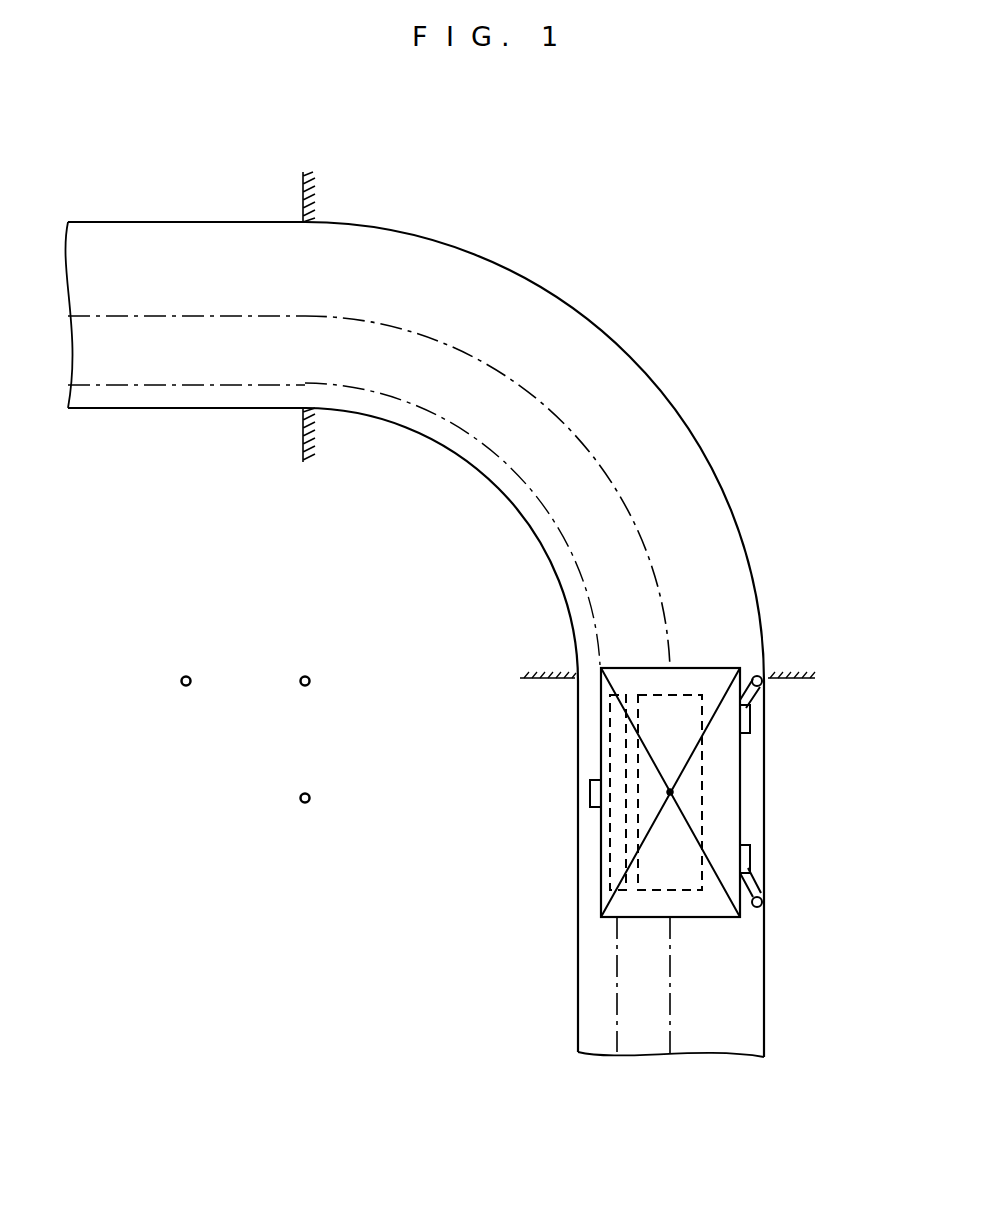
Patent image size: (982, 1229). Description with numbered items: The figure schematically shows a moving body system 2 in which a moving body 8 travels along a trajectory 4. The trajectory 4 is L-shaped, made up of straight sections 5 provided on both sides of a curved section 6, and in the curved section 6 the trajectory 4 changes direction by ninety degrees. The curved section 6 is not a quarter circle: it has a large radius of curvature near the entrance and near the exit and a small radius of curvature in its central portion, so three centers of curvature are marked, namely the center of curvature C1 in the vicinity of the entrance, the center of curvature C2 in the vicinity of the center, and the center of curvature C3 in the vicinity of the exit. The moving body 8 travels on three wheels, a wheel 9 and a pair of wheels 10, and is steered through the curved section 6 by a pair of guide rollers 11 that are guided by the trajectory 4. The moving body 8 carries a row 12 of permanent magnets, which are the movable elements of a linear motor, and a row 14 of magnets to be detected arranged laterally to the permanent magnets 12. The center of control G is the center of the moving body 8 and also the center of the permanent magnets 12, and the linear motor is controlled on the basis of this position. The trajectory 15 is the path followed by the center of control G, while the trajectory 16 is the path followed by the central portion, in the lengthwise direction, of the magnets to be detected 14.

The moving body system 2 is at (292, 1040).
The trajectory 4 is at (572, 866).
The straight sections 5 is at (183, 400).
The curved section 6 is at (622, 369).
The moving body 8 is at (732, 760).
The wheel 9 is at (594, 790).
The pair of wheels 10 is at (745, 718).
The guide rollers 11 is at (757, 666).
The row of permanent magnets 12 is at (660, 875).
The row of magnets to be detected 14 is at (612, 826).
The trajectory of the center of control 15 is at (673, 998).
The trajectory of the magnets to be detected 16 is at (620, 1015).
The center of control G is at (674, 792).
The center of curvature in the vicinity of the entrance C1 is at (185, 662).
The center of curvature in the vicinity of the center C2 is at (291, 697).
The center of curvature in the vicinity of the exit C3 is at (323, 814).